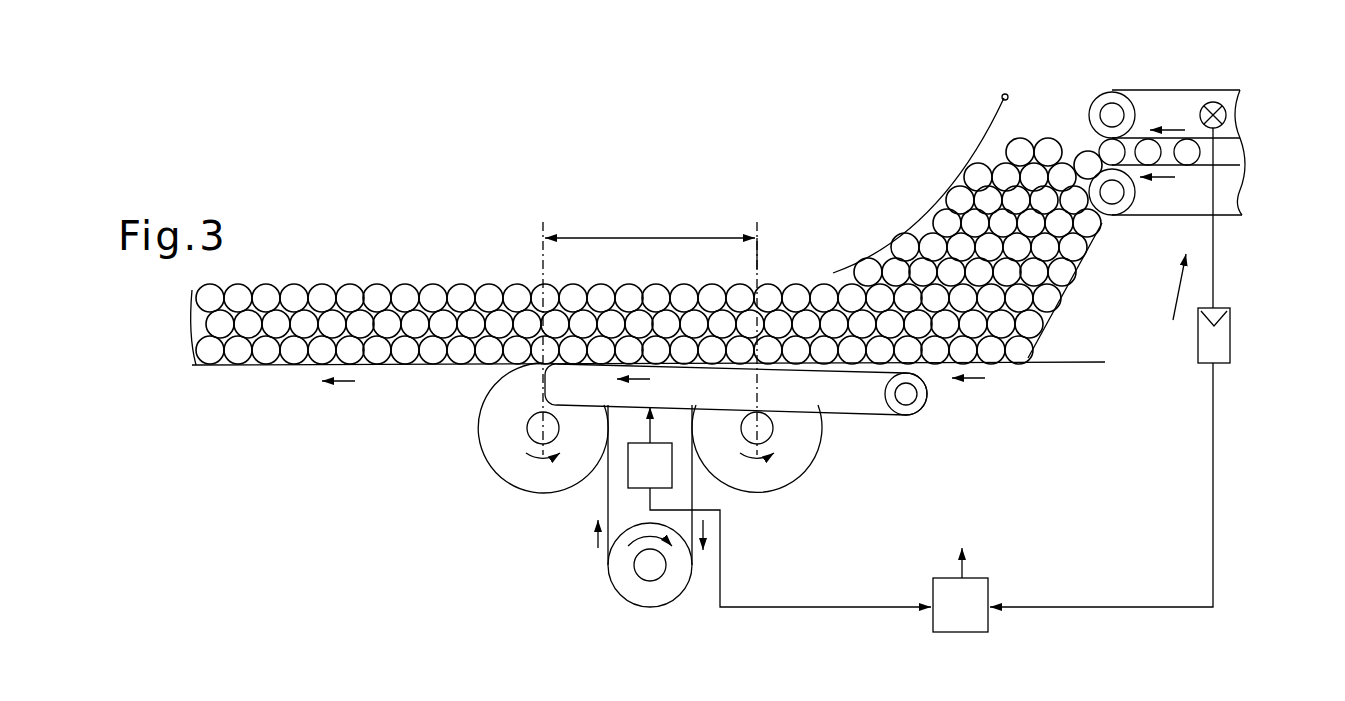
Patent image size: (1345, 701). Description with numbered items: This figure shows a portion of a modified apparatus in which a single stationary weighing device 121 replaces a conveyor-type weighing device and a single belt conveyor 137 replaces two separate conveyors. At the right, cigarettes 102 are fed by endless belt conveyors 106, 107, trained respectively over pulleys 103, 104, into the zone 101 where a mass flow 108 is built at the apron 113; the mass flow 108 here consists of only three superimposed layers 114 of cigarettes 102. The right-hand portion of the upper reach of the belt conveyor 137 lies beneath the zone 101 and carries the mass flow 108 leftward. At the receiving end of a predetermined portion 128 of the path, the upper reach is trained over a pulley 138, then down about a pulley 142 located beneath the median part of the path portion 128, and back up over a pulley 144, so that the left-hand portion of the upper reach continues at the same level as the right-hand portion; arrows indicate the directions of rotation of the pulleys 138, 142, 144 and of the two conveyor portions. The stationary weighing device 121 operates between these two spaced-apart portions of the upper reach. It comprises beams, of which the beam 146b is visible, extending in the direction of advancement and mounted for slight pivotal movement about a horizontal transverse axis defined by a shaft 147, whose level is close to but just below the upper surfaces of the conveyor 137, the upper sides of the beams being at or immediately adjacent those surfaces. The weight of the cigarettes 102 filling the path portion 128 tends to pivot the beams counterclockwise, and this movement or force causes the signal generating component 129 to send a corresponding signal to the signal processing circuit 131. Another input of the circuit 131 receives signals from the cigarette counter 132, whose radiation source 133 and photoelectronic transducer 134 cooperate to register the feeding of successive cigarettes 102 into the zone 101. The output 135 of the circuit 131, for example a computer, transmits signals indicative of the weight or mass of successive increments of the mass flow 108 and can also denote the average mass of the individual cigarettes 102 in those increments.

The zone 101 is at (1036, 132).
The cigarettes 102 is at (1196, 153).
The pulley 103 is at (1110, 94).
The pulley 104 is at (1118, 207).
The endless belt conveyor 106 is at (1228, 136).
The endless belt conveyor 107 is at (1224, 168).
The mass flow 108 is at (801, 268).
The apron 113 is at (983, 143).
The layers 114 is at (628, 294).
The stationary weighing device 121 is at (589, 500).
The predetermined portion of the path 128 is at (650, 326).
The signal generating component 129 is at (672, 470).
The signal processing circuit 131 is at (945, 593).
The cigarette counter 132 is at (1163, 302).
The radiation source 133 is at (1211, 102).
The photoelectronic transducer 134 is at (1226, 343).
The output 135 is at (964, 575).
The belt conveyor 137 is at (427, 366).
The pulley 138 is at (808, 452).
The pulley 142 is at (626, 580).
The pulley 144 is at (494, 447).
The beam 146b is at (846, 398).
The shaft 147 is at (912, 398).